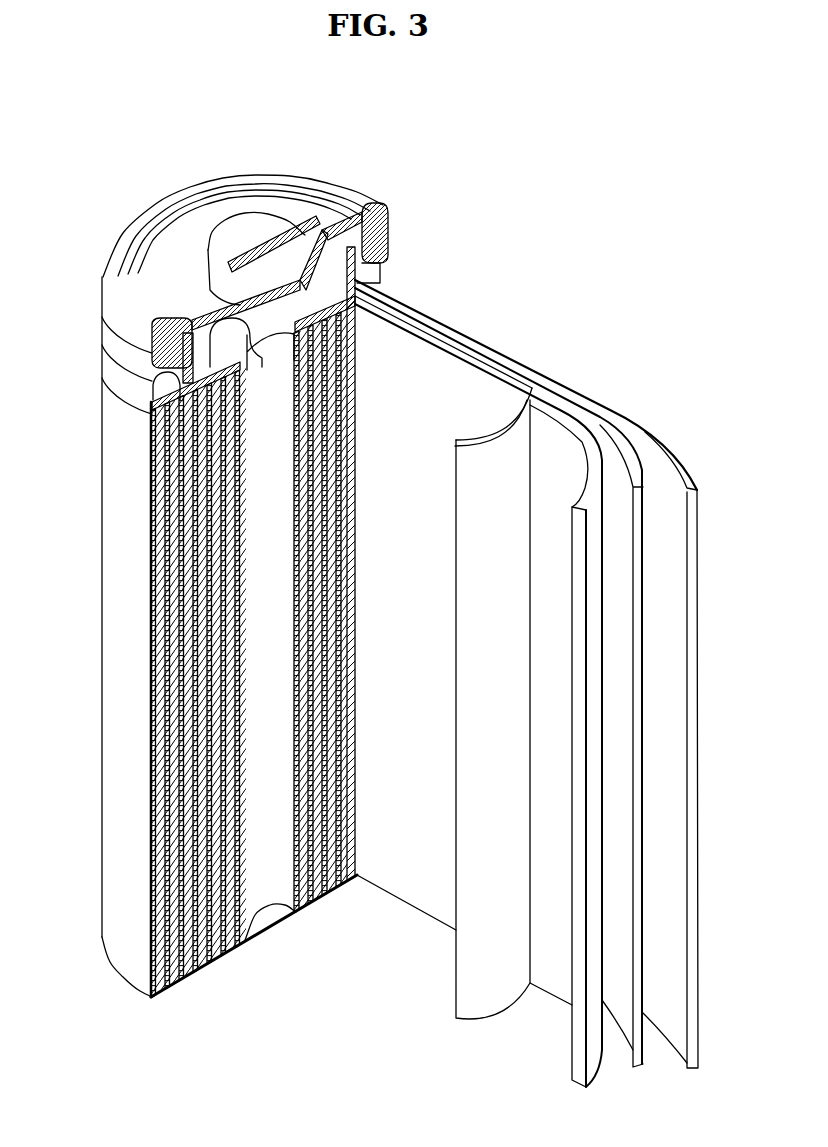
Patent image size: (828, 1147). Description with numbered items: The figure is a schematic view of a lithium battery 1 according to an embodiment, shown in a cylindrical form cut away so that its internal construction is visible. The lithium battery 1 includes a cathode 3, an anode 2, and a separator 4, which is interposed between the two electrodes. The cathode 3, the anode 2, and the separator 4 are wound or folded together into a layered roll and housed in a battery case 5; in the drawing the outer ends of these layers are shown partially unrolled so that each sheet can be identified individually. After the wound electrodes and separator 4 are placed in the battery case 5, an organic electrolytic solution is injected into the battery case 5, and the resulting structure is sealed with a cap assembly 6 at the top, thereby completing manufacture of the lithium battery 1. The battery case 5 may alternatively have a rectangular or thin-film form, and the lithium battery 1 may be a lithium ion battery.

The lithium battery 1 is at (552, 193).
The anode 2 is at (670, 453).
The cathode 3 is at (587, 450).
The separator 4 is at (493, 443).
The battery case 5 is at (100, 634).
The cap assembly 6 is at (237, 222).